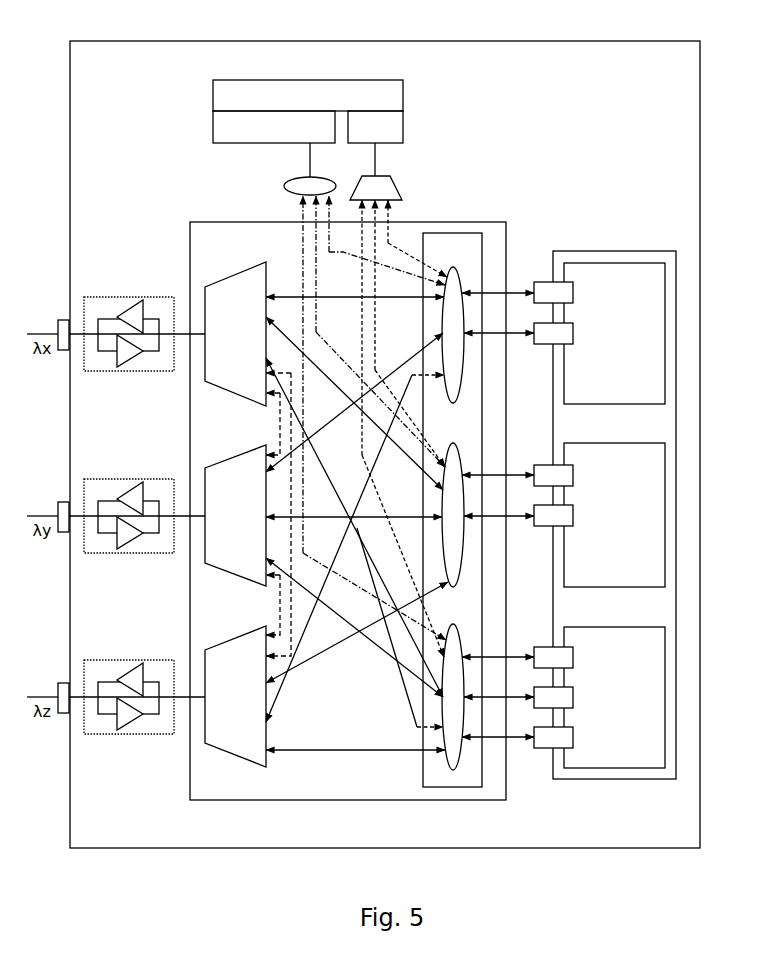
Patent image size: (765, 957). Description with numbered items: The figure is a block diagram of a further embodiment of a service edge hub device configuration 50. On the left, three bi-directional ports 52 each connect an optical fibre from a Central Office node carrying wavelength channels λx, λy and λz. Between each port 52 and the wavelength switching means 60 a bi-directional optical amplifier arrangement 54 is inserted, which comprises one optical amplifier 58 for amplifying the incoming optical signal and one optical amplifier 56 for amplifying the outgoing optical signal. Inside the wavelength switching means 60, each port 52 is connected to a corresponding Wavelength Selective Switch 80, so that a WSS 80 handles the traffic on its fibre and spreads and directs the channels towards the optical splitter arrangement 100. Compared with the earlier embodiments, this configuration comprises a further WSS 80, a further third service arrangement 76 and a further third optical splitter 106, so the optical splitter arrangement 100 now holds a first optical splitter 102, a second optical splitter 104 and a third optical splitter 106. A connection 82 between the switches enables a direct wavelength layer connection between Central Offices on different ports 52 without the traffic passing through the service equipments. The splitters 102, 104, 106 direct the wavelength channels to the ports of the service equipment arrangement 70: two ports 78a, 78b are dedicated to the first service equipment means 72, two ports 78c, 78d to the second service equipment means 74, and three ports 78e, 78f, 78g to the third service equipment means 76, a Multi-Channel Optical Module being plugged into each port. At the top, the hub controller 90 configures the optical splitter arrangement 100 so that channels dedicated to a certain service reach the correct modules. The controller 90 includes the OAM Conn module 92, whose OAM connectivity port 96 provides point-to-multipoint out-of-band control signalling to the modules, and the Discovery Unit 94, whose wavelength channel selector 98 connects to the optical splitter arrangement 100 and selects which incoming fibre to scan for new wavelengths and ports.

The hub device configuration 50 is at (247, 48).
The port 52 is at (60, 318).
The bi-directional optical amplifier arrangement 54 is at (106, 298).
The optical amplifier 56 is at (142, 300).
The optical amplifier 58 is at (119, 368).
The wavelength switching means 60 is at (205, 222).
The service equipment arrangement 70 is at (568, 251).
The service equipment means 72 is at (601, 263).
The service equipment means 74 is at (582, 445).
The service equipment means 76 is at (590, 629).
The port 78a is at (546, 282).
The port 78b is at (552, 345).
The port 78c is at (549, 465).
The port 78d is at (552, 527).
The port 78e is at (549, 647).
The port 78f is at (578, 710).
The port 78g is at (553, 749).
The Wavelength Selective Switch 80 is at (232, 286).
The connection 82 is at (290, 403).
The hub controller 90 is at (405, 98).
The OAM Conn 92 is at (212, 123).
The Discovery Unit 94 is at (405, 134).
The OAM connectivity port 96 is at (285, 184).
The wavelength channel selector 98 is at (394, 186).
The optical splitter arrangement 100 is at (447, 234).
The optical splitter S1 102 is at (484, 250).
The optical splitter S2 104 is at (463, 548).
The optical splitter S3 106 is at (458, 768).